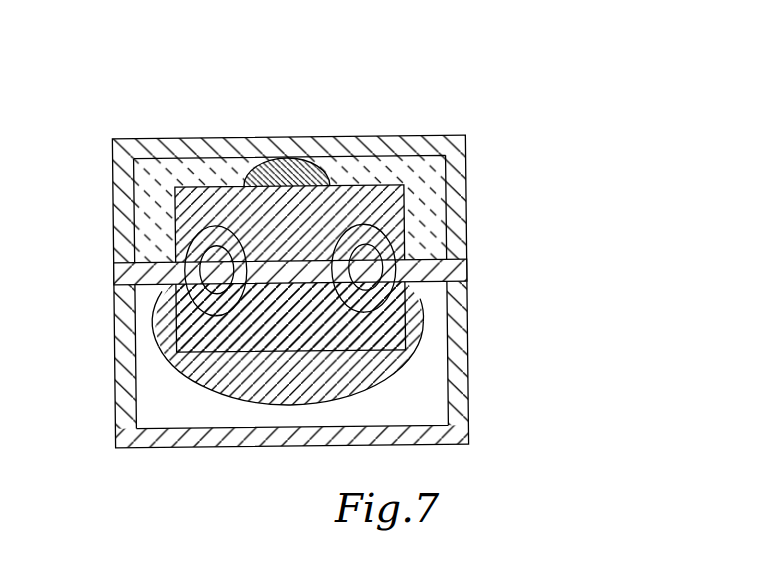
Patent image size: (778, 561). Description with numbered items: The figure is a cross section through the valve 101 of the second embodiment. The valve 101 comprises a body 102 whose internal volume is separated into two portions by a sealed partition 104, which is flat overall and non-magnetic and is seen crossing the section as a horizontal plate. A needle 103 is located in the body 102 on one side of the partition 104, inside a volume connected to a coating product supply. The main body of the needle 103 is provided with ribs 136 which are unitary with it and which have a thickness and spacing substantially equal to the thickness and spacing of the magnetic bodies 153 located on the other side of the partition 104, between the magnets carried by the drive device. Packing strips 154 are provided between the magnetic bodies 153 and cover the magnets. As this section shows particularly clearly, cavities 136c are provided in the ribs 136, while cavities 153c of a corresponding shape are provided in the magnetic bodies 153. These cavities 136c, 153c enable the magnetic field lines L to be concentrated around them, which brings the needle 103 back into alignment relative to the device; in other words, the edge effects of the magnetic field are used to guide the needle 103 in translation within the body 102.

The valve 101 is at (491, 93).
The body 102 is at (360, 140).
The needle 103 is at (210, 389).
The sealed partition 104 is at (450, 268).
The ribs 136 is at (182, 270).
The cavities 136c is at (162, 356).
The magnetic bodies 153 is at (200, 223).
The cavities 153c is at (372, 247).
The packing strips 154 is at (207, 176).
The magnetic field lines L is at (380, 293).